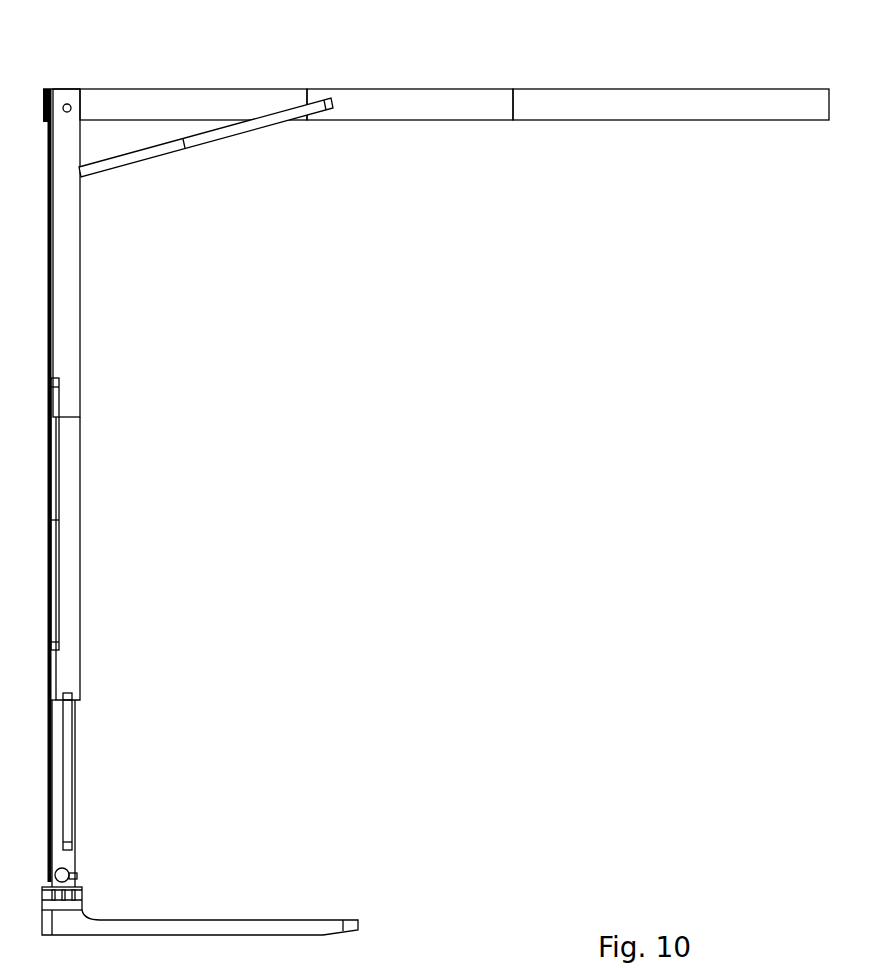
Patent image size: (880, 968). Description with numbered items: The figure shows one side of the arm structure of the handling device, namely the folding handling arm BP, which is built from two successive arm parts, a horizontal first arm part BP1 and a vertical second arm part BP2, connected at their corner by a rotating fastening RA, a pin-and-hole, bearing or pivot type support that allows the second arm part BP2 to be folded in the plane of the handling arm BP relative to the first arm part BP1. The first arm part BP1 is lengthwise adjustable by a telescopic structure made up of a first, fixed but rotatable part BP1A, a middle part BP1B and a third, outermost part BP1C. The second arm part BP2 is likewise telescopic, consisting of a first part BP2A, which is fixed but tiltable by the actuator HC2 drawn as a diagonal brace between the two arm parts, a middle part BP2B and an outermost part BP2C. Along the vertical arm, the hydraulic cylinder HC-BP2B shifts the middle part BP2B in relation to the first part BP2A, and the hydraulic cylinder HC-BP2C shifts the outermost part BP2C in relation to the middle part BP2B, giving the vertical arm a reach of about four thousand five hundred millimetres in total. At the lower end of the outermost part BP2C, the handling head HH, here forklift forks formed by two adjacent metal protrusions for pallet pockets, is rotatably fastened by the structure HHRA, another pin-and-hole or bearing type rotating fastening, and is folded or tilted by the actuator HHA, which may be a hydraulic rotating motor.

The folding handling arm BP is at (436, 454).
The first arm part BP1 is at (454, 165).
The first part of the first arm part BP1A is at (688, 125).
The middle part of the first arm part BP1B is at (421, 125).
The outermost part of the first arm part BP1C is at (228, 98).
The second arm part BP2 is at (230, 488).
The first part of the second arm part BP2A is at (80, 268).
The middle part of the second arm part BP2B is at (80, 548).
The outermost part of the second arm part BP2C is at (77, 815).
The actuator HC2 is at (223, 143).
The hydraulic cylinder HC-BP2B is at (58, 475).
The hydraulic cylinder HC-BP2C is at (72, 740).
The rotating fastening RA is at (70, 105).
The rotating fastening structure HHRA is at (73, 878).
The actuator HHA is at (82, 898).
The handling head HH is at (163, 918).